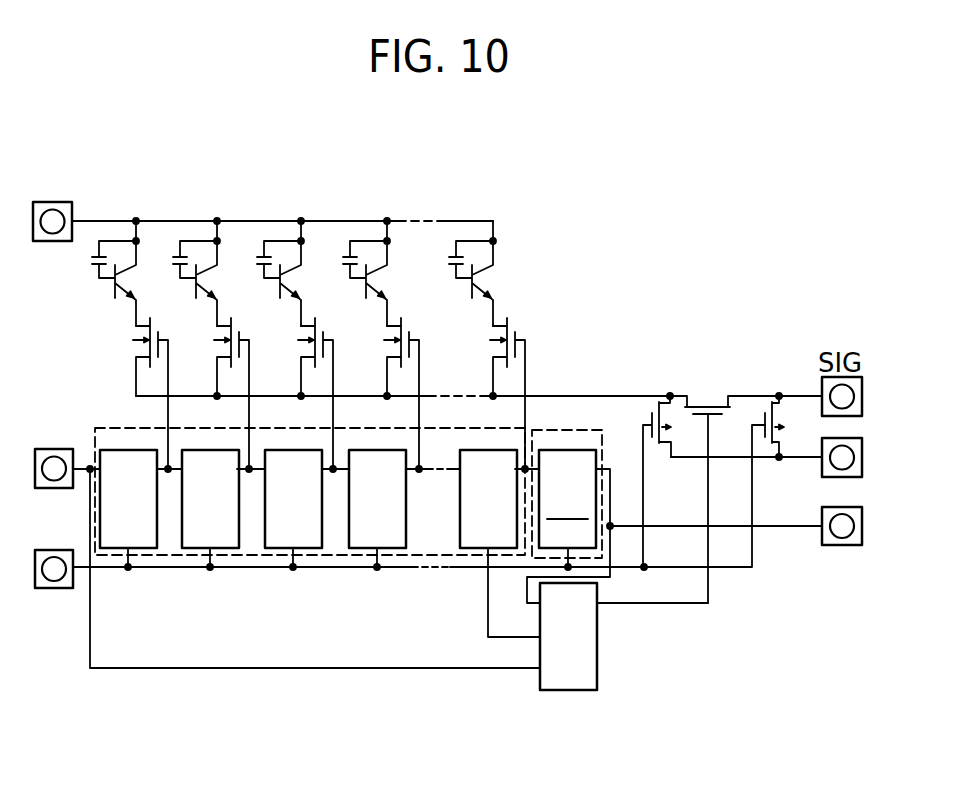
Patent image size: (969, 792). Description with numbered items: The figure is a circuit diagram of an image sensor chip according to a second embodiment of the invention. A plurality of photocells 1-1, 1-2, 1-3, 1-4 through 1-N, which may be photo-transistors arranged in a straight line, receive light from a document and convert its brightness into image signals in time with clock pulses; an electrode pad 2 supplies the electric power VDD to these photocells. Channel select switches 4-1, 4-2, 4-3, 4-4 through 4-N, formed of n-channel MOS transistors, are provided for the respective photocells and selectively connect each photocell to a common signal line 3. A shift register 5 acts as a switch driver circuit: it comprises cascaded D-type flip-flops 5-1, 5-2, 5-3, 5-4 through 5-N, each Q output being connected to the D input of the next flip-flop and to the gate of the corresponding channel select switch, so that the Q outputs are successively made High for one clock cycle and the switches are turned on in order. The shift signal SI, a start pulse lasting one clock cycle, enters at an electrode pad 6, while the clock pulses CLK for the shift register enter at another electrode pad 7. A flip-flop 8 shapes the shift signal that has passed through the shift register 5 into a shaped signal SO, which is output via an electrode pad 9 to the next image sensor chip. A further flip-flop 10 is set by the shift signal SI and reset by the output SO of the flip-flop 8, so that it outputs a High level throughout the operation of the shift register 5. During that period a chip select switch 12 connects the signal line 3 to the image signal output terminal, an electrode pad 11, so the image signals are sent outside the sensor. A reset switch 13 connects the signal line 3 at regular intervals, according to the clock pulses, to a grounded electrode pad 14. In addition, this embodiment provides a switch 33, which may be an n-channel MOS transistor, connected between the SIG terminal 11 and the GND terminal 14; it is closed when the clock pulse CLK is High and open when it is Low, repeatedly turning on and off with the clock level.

The photocell 1-1 is at (138, 240).
The photocell 1-2 is at (222, 240).
The photocell 1-3 is at (311, 240).
The photocell 1-4 is at (402, 240).
The photocell 1-N is at (506, 240).
The electrode pad 2 is at (54, 244).
The signal line 3 is at (571, 394).
The channel select switch 4-1 is at (115, 386).
The channel select switch 4-2 is at (206, 386).
The channel select switch 4-3 is at (289, 386).
The channel select switch 4-4 is at (374, 386).
The channel select switch 4-N is at (474, 386).
The shift register 5 is at (303, 556).
The D-type flip-flop 5-1 is at (157, 533).
The D-type flip-flop 5-2 is at (238, 515).
The D-type flip-flop 5-3 is at (323, 523).
The D-type flip-flop 5-4 is at (407, 530).
The D-type flip-flop 5-N is at (517, 530).
The electrode pad 6 is at (74, 447).
The electrode pad 7 is at (57, 590).
The flip-flop 8 is at (600, 506).
The electrode pad 9 is at (818, 538).
The flip-flop 10 is at (597, 660).
The electrode pad 11 is at (830, 463).
The chip select switch 12 is at (703, 395).
The reset switch 13 is at (653, 394).
The electrode pad 14 is at (820, 465).
The switch 33 is at (770, 394).